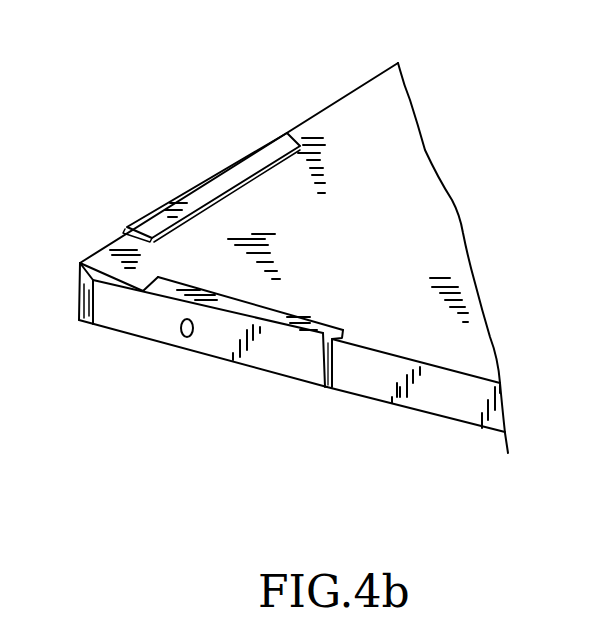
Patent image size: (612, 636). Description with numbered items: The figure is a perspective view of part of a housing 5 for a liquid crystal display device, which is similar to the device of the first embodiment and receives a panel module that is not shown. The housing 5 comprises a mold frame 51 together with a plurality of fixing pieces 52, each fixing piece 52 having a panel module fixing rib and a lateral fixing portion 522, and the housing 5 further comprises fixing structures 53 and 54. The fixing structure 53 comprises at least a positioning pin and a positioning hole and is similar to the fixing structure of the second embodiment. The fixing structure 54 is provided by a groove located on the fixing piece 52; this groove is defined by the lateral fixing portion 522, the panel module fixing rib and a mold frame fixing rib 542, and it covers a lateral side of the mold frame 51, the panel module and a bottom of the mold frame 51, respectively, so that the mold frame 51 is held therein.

The housing 5 is at (301, 263).
The mold frame 51 is at (447, 219).
The fixing piece 52 is at (140, 330).
The fixing structure 53 is at (187, 337).
The fixing structure 54 is at (214, 134).
The lateral fixing portion 522 is at (313, 380).
The mold frame fixing rib 542 is at (200, 192).